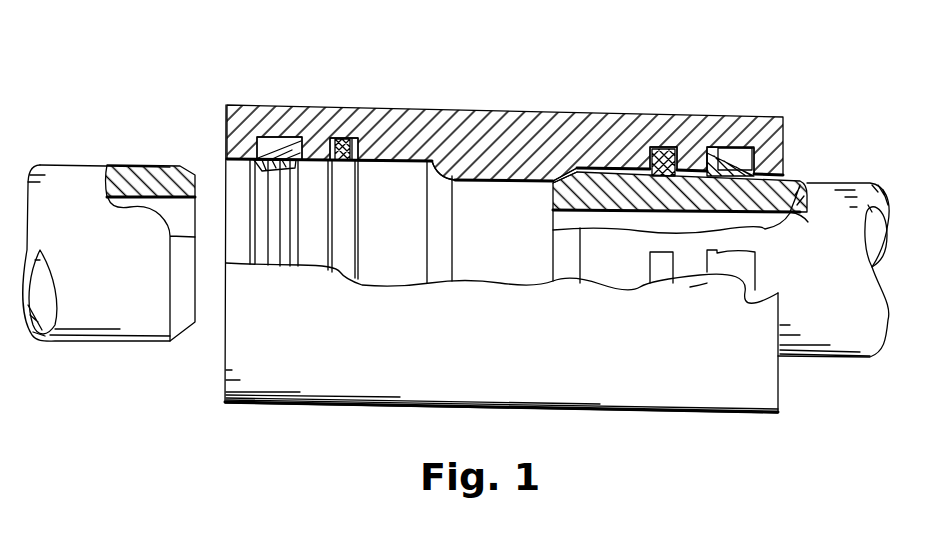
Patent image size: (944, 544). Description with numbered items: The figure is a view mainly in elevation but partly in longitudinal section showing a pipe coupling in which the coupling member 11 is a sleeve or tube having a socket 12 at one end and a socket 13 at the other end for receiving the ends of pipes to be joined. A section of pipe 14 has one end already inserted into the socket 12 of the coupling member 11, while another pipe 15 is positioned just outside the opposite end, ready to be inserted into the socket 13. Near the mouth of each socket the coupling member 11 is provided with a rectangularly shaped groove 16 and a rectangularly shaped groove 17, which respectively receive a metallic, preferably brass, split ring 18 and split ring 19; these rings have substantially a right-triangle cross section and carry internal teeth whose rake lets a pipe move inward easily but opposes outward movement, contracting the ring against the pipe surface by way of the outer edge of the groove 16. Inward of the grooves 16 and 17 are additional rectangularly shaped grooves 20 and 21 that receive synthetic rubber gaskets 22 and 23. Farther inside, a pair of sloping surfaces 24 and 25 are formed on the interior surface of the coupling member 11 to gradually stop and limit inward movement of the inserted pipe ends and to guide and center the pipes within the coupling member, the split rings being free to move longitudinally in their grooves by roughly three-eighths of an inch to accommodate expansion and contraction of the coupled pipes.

The coupling member 11 is at (492, 107).
The socket 12 is at (787, 174).
The socket 13 is at (222, 170).
The pipe 14 is at (850, 180).
The pipe 15 is at (62, 165).
The groove 16 is at (743, 157).
The groove 17 is at (263, 136).
The split ring 18 is at (737, 165).
The split ring 19 is at (283, 147).
The groove 20 is at (657, 150).
The groove 21 is at (333, 140).
The synthetic rubber gasket 22 is at (658, 160).
The synthetic rubber gasket 23 is at (347, 138).
The sloping surface 24 is at (567, 170).
The sloping surface 25 is at (440, 177).